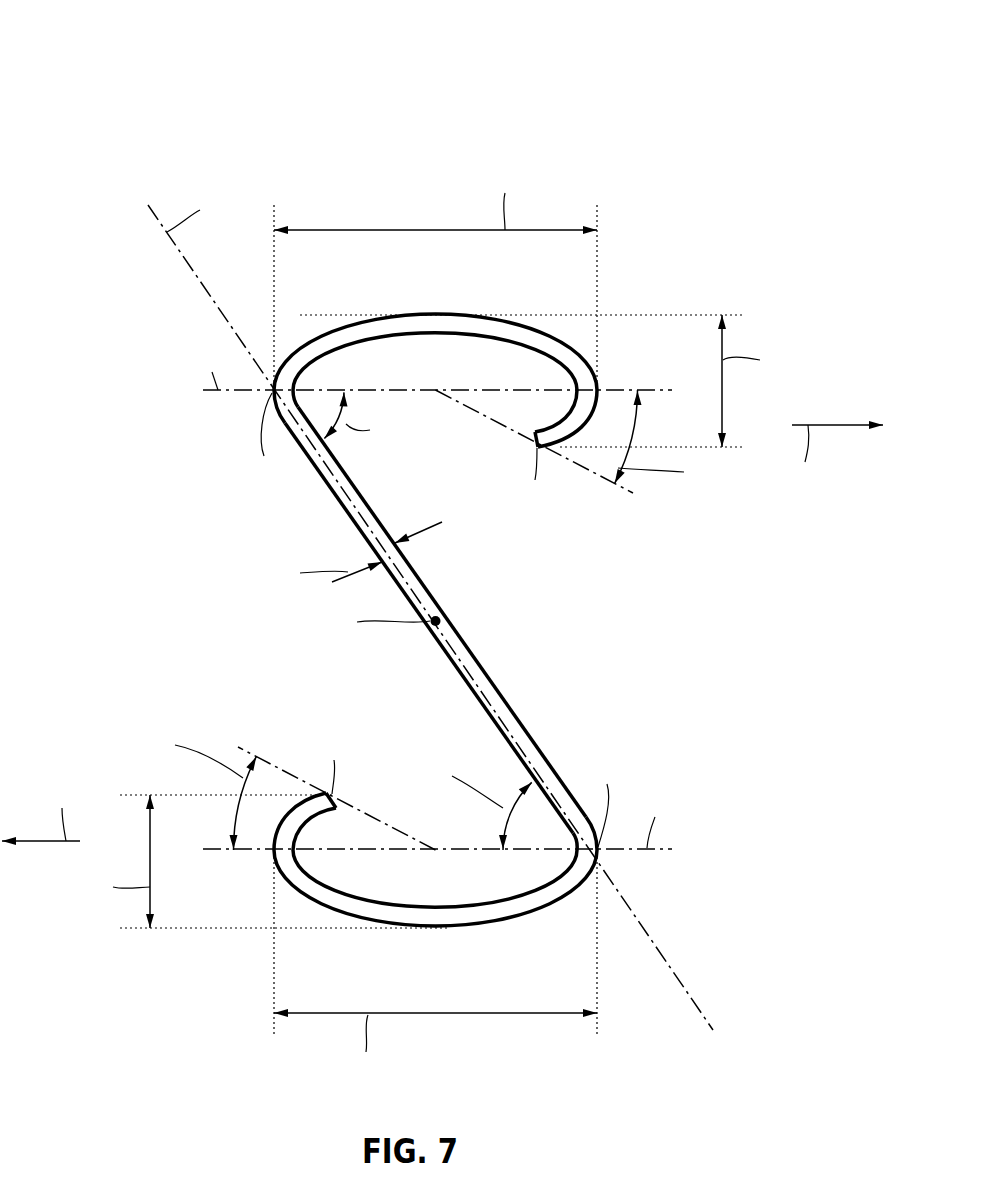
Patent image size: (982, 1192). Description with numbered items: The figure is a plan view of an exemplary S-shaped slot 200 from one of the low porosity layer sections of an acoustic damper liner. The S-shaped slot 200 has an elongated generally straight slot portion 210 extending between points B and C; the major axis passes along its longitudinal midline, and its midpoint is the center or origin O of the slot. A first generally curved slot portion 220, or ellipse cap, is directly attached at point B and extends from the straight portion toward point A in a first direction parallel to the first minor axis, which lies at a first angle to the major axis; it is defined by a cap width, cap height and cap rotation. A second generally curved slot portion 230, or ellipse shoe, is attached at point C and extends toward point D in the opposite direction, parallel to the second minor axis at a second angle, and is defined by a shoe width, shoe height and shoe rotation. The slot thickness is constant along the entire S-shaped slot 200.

The S-shaped slot 200 is at (442, 561).
The elongated generally straight slot portion 210 is at (450, 703).
The first generally curved slot portion 220 is at (558, 320).
The second generally curved slot portion 230 is at (318, 918).